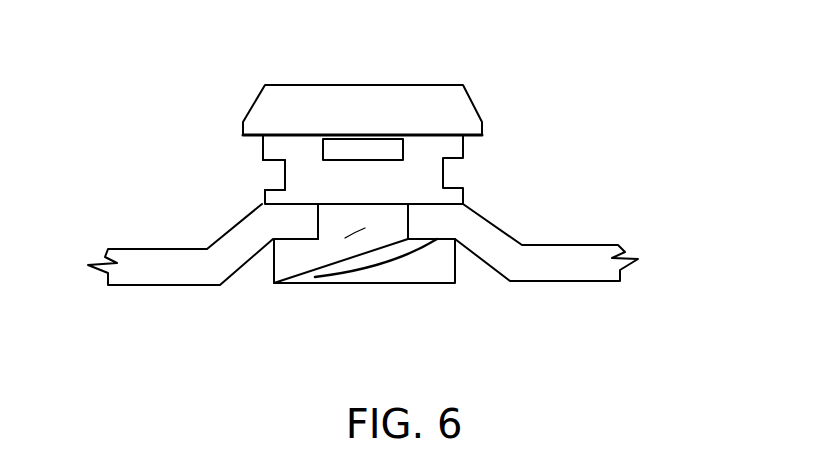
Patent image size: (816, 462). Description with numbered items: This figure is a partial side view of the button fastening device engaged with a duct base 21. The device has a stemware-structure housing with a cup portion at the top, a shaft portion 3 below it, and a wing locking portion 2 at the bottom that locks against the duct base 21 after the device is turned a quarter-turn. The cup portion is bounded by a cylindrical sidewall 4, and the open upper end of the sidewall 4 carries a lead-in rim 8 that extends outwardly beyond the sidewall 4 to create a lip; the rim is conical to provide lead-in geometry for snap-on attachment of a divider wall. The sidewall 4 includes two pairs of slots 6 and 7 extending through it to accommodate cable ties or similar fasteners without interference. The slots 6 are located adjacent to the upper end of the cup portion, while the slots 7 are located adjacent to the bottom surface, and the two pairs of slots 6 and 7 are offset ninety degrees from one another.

The wing locking portion 2 is at (398, 283).
The shaft portion 3 is at (413, 223).
The cylindrical sidewall 4 is at (467, 148).
The slots 6 is at (343, 150).
The slots 7 is at (266, 176).
The lead-in rim 8 is at (253, 104).
The duct base 21 is at (590, 243).